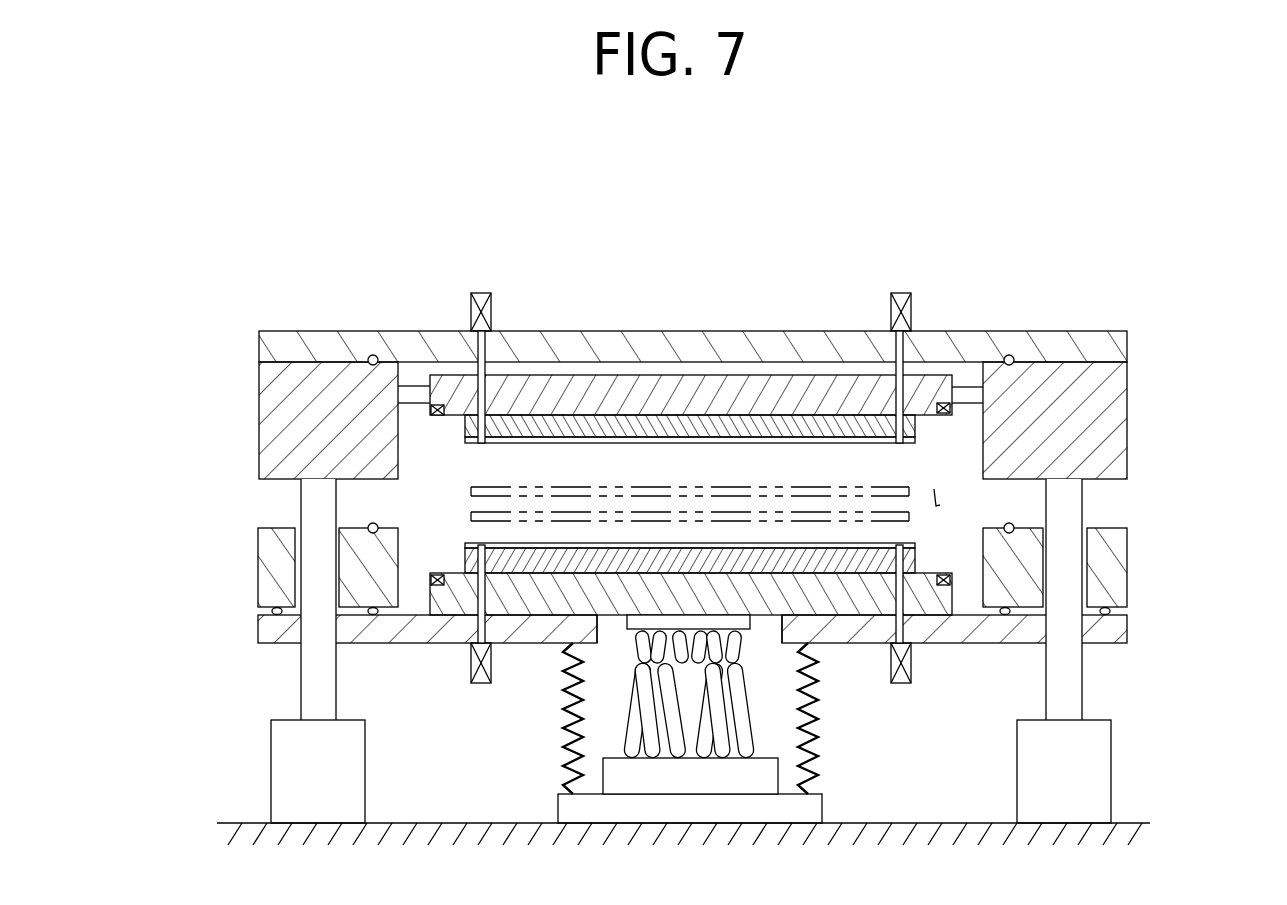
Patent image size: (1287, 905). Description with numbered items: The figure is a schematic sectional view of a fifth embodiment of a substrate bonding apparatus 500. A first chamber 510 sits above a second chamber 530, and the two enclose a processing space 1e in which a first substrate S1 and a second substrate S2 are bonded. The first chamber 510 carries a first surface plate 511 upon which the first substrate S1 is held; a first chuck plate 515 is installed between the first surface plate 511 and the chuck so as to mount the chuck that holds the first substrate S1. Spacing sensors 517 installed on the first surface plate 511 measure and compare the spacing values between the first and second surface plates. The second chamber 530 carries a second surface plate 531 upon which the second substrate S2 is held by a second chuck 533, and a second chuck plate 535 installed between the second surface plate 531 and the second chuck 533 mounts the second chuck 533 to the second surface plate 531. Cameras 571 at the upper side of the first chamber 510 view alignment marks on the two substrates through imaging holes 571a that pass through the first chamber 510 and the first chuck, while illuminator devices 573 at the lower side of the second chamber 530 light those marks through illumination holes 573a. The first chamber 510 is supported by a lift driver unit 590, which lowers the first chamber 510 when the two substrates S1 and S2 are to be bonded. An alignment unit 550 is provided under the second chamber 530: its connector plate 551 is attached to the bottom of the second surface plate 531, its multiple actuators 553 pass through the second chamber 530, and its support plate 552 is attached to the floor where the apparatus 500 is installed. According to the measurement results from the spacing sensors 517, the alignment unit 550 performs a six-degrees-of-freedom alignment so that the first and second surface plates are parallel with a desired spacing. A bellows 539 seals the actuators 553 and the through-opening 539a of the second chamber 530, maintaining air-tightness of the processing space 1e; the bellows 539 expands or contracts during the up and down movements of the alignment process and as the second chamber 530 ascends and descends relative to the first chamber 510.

The substrate bonding apparatus 500 is at (712, 231).
The first chamber 510 is at (1145, 403).
The first surface plate 511 is at (398, 386).
The first chuck plate 515 is at (465, 427).
The spacing sensors 517 is at (398, 403).
The second chamber 530 is at (1145, 565).
The second surface plate 531 is at (455, 603).
The second chuck 533 is at (465, 548).
The second chuck plate 535 is at (455, 565).
The bellows 539 is at (563, 712).
The through-opening 539a is at (600, 627).
The alignment unit 550 is at (930, 690).
The connector plate 551 is at (752, 622).
The support plate 552 is at (770, 780).
The actuators 553 is at (465, 443).
The cameras 571 is at (491, 303).
The imaging holes 571a is at (490, 397).
The illuminator devices 573 is at (471, 660).
The illumination holes 573a is at (468, 587).
The lift driver unit 590 is at (262, 751).
The first substrate S1 is at (898, 488).
The second substrate S2 is at (898, 522).
The processing space 1e is at (938, 493).